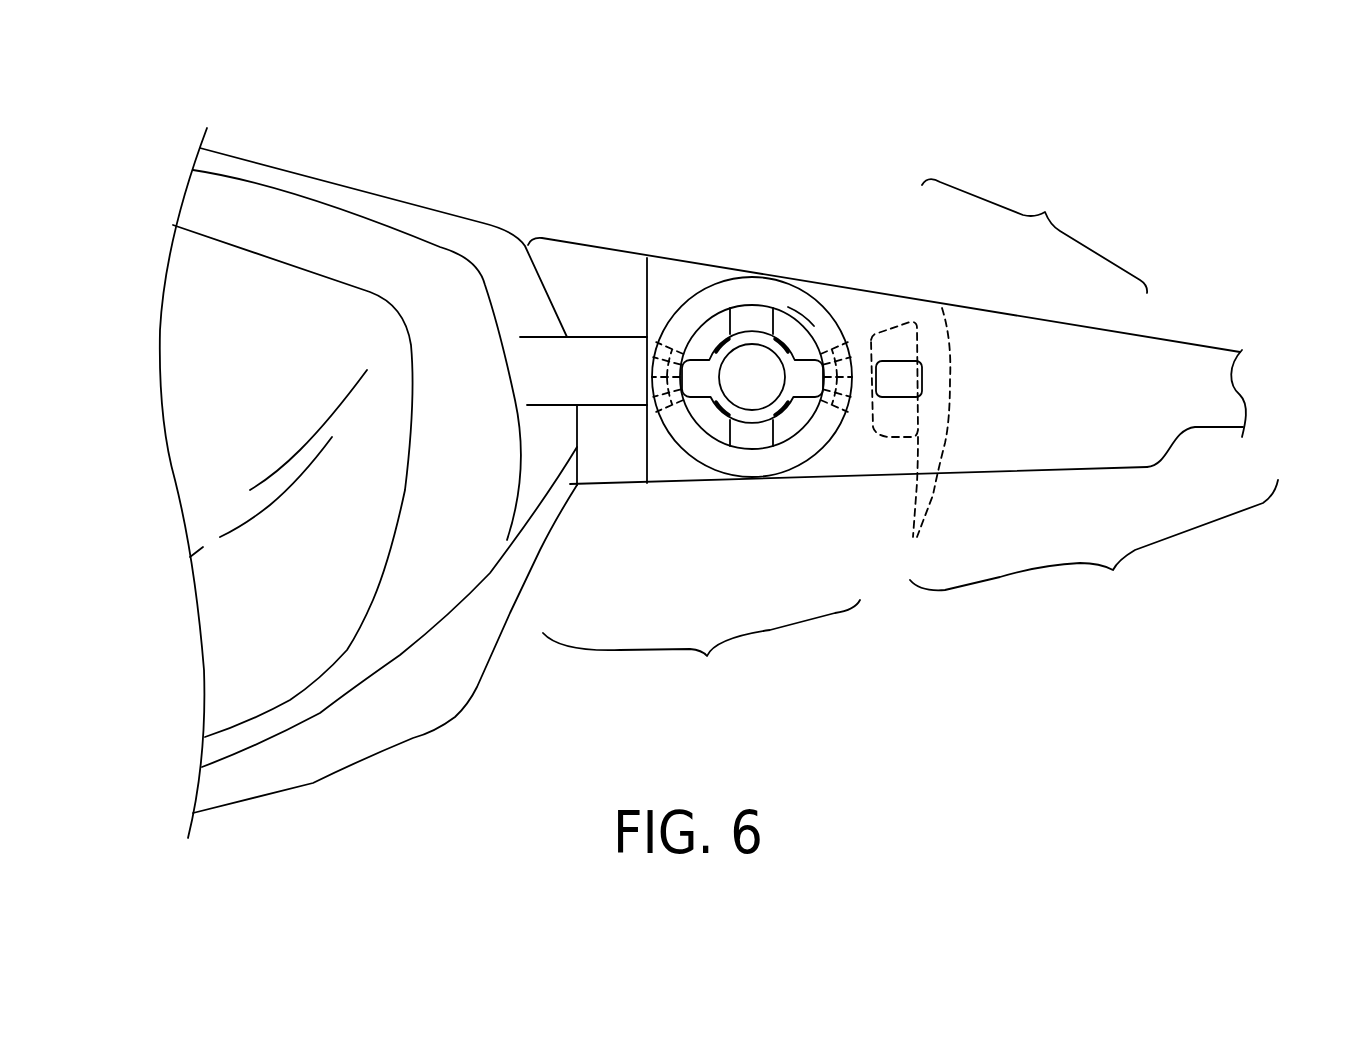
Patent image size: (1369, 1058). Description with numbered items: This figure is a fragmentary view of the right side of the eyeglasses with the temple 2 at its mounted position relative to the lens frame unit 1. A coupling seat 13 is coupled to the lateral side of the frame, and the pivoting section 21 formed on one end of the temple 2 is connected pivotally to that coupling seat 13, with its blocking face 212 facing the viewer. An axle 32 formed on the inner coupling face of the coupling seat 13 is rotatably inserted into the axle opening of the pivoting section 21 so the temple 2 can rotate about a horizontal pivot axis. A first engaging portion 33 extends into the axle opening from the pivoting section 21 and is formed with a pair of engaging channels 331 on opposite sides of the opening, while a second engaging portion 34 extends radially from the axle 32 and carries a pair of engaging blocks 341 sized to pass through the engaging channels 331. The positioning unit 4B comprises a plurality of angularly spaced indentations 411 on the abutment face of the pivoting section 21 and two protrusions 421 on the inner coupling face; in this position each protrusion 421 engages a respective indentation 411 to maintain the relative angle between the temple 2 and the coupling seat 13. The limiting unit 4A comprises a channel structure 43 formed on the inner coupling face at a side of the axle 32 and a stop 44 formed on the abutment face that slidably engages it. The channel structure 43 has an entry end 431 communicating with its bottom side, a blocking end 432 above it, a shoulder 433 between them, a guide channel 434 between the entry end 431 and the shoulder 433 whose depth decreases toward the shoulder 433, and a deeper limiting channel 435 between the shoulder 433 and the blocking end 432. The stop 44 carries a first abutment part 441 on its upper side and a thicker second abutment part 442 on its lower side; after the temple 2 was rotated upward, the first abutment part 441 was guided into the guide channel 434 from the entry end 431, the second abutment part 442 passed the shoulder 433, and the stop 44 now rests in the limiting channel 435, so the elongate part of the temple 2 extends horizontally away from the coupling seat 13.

The lens frame unit 1 is at (292, 166).
The temple 2 is at (1262, 380).
The coupling seat 13 is at (612, 240).
The pivoting section 21 is at (685, 488).
The blocking face 212 is at (783, 322).
The axle 32 is at (752, 417).
The first engaging portion 33 is at (745, 297).
The engaging channel 331 is at (757, 308).
The second engaging portion 34 is at (687, 347).
The engaging block 341 is at (699, 357).
The limiting unit 4A is at (1094, 394).
The positioning unit 4B is at (701, 649).
The indentation 411 is at (665, 412).
The protrusion 421 is at (647, 380).
The channel structure 43 is at (887, 323).
The entry end 431 is at (878, 450).
The blocking end 432 is at (922, 323).
The shoulder 433 is at (916, 412).
The guide channel 434 is at (910, 440).
The limiting channel 435 is at (907, 343).
The stop 44 is at (930, 383).
The first abutment part 441 is at (923, 370).
The second abutment part 442 is at (923, 400).